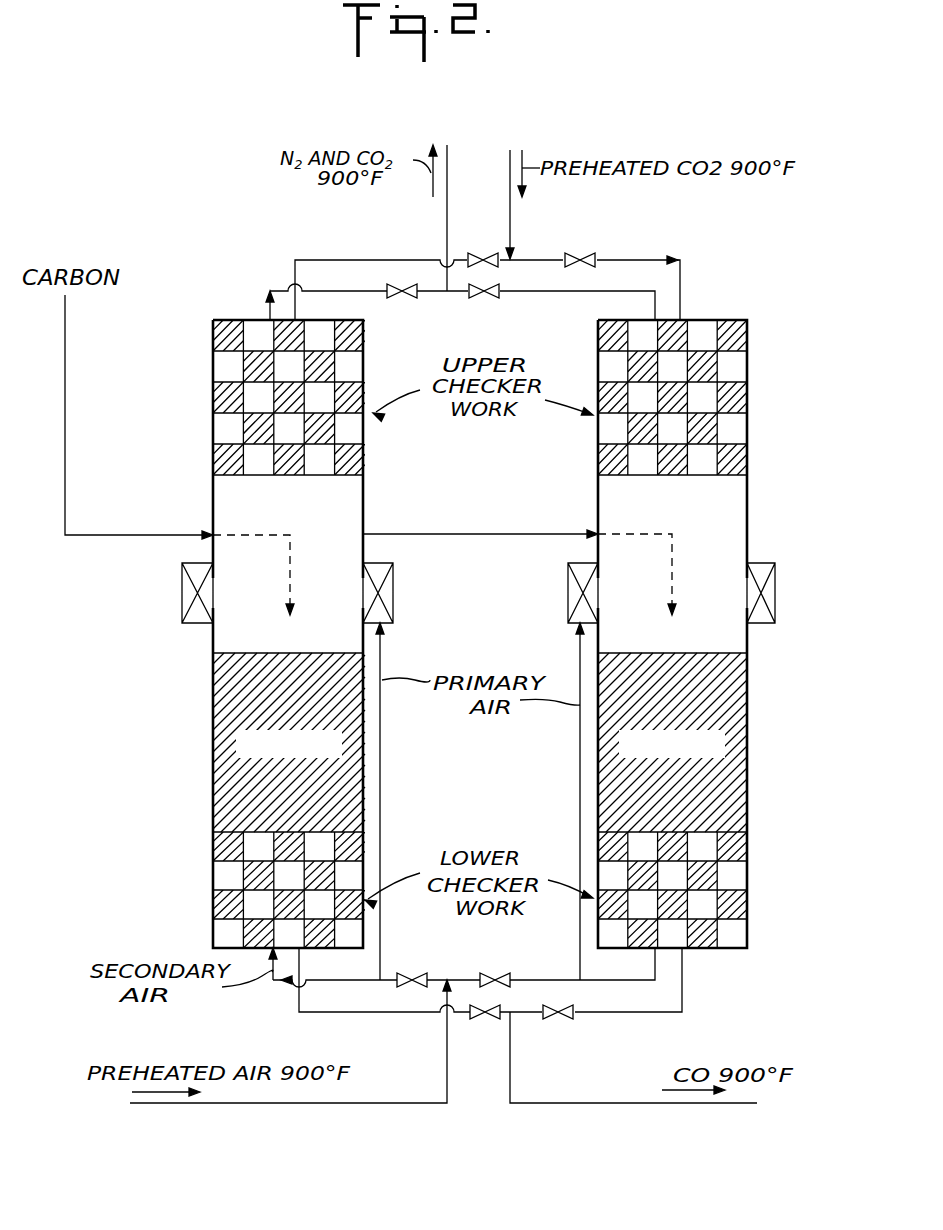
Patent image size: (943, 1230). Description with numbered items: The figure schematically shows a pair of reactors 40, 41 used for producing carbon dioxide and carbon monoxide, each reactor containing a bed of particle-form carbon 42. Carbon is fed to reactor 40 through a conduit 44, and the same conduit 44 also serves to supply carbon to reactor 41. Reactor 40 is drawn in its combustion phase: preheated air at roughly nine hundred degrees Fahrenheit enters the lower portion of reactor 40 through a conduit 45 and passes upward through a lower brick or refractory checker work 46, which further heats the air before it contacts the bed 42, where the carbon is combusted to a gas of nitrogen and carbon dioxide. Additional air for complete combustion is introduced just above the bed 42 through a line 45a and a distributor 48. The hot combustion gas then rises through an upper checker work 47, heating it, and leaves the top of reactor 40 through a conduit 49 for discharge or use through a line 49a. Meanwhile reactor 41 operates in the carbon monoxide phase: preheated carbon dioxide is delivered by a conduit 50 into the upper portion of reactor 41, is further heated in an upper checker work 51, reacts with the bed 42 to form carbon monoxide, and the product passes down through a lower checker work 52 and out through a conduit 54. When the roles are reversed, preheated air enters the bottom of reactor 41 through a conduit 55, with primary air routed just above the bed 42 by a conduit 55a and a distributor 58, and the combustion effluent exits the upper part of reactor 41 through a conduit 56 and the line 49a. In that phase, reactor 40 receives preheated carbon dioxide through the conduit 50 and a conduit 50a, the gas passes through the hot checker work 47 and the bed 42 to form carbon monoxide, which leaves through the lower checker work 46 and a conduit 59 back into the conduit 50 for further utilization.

The reactor 40 is at (215, 492).
The reactor 41 is at (748, 510).
The bed of particle-form carbon 42 is at (222, 683).
The conduit 44 is at (101, 534).
The conduit 45 is at (320, 980).
The line 45a is at (382, 650).
The checker work 46 is at (225, 887).
The upper checker work 47 is at (222, 370).
The distributor 48 is at (182, 595).
The conduit 49 is at (280, 288).
The line 49a is at (447, 223).
The conduit 50 is at (512, 213).
The conduit 50a is at (345, 259).
The checker work 51 is at (735, 372).
The lower checker work 52 is at (748, 895).
The conduit 54 is at (684, 995).
The conduit 55 is at (655, 968).
The conduit 55a is at (578, 650).
The conduit 56 is at (545, 291).
The distributor 58 is at (568, 595).
The conduit 59 is at (299, 1012).